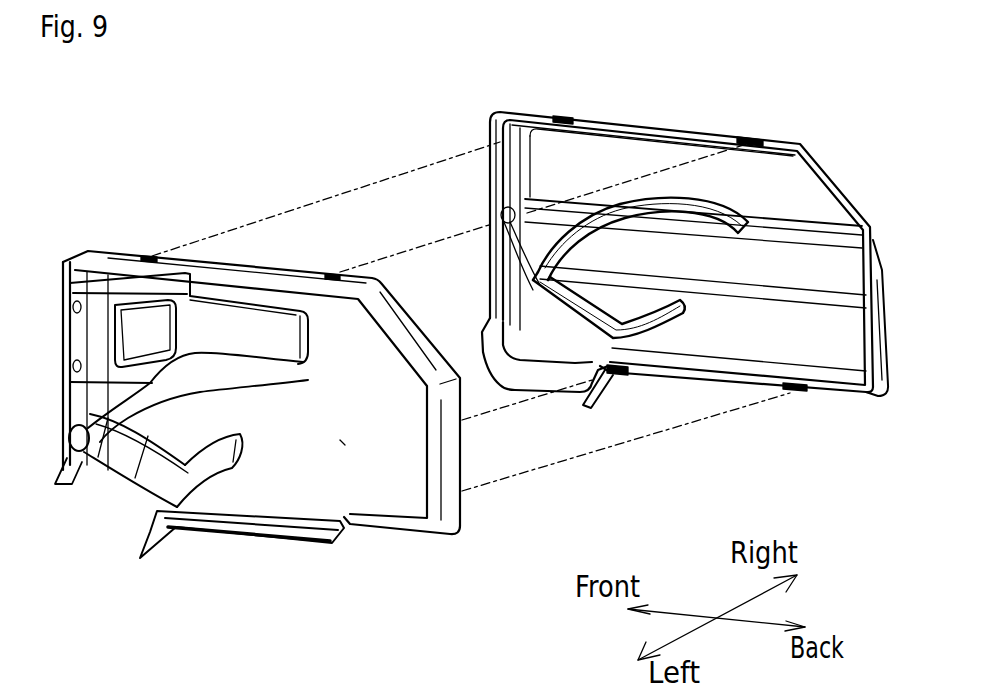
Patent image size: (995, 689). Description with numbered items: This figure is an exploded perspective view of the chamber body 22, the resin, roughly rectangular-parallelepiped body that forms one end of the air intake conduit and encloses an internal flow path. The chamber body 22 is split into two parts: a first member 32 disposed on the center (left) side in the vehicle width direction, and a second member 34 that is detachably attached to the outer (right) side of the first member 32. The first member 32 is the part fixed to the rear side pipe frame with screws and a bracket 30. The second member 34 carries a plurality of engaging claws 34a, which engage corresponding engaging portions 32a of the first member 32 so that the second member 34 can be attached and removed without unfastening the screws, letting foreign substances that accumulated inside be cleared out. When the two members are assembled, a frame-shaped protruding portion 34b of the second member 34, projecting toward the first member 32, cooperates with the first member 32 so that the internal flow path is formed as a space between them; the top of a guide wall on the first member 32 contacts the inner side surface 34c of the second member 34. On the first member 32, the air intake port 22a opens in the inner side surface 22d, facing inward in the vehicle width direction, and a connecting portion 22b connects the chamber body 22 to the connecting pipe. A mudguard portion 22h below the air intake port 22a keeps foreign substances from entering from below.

The chamber body 22 is at (197, 163).
The air intake port 22a is at (160, 330).
The connecting portion 22b is at (118, 472).
The inner side surface 22d is at (331, 446).
The mudguard portion 22h is at (255, 542).
The bracket 30 is at (290, 345).
The first member 32 is at (396, 536).
The engaging portions 32a is at (150, 255).
The second member 34 is at (834, 171).
The engaging claws 34a is at (564, 117).
The frame-shaped protruding portion 34b is at (838, 400).
The inner side surface 34c is at (758, 303).